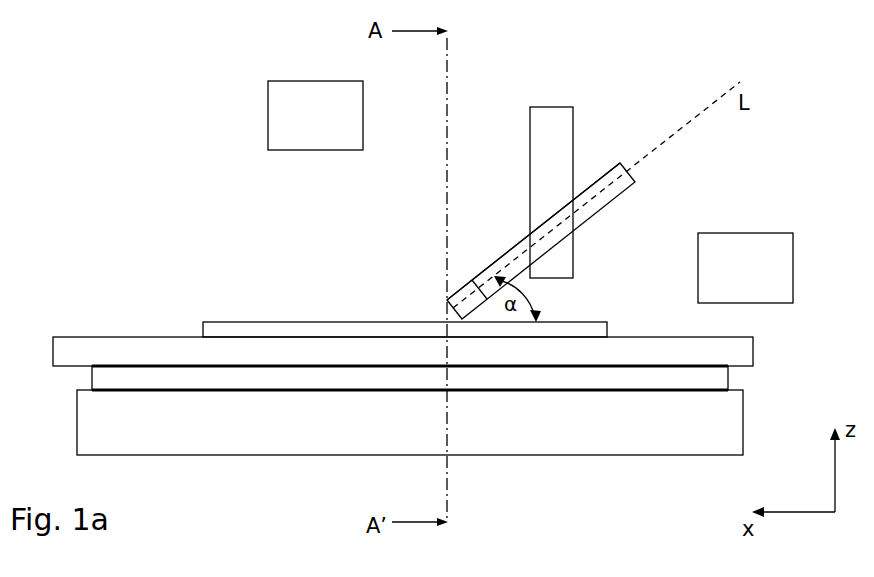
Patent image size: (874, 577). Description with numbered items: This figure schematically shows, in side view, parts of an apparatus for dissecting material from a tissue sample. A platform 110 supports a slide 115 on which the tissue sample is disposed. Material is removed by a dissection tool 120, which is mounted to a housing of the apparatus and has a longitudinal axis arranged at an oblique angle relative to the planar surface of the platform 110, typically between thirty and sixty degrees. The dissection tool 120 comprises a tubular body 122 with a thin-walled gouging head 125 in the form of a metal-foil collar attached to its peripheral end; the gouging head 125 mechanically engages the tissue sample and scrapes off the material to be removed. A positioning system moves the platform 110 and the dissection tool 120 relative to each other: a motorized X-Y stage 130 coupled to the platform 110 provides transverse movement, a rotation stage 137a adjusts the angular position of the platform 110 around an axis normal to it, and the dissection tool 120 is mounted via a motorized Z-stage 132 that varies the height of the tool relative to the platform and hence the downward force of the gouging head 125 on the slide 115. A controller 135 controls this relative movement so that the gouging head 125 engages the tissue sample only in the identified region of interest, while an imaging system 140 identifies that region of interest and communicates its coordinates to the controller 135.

The platform 110 is at (163, 350).
The slide 115 is at (280, 328).
The dissection tool 120 is at (497, 218).
The tubular body 122 is at (515, 257).
The gouging head 125 is at (450, 298).
The motorized X-Y stage 130 is at (522, 433).
The motorized Z-stage 132 is at (547, 118).
The controller 135 is at (767, 281).
The rotation stage 137a is at (558, 378).
The imaging system 140 is at (338, 127).